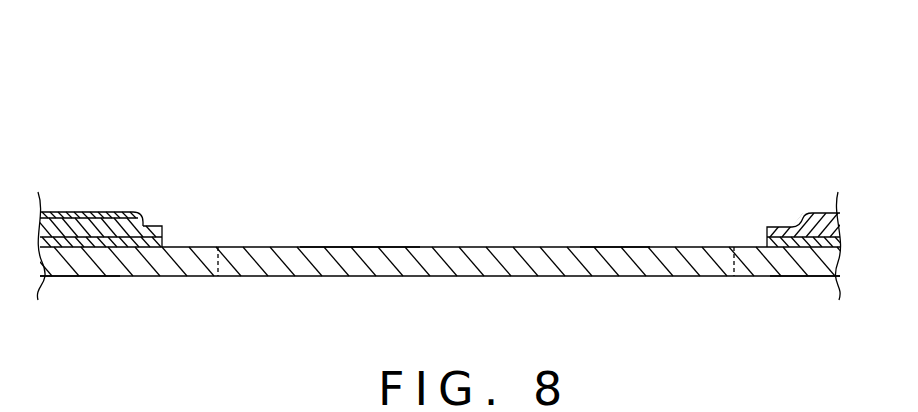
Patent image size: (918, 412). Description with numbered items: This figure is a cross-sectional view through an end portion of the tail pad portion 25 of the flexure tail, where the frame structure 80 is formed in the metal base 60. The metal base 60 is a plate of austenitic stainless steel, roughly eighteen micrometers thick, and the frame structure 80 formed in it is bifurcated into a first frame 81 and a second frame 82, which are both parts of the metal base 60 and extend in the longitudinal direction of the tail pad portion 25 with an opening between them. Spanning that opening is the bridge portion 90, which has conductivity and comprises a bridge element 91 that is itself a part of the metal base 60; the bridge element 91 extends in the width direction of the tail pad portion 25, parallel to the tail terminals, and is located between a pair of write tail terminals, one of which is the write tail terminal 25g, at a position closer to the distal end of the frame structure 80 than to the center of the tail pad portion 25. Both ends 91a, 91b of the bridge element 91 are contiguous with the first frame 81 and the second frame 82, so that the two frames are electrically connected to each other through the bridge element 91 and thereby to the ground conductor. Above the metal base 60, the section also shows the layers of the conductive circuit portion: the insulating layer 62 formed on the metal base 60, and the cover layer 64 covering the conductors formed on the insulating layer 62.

The tail pad portion 25 is at (456, 173).
The write tail terminal 25g is at (612, 247).
The bridge portion 90 is at (359, 245).
The bridge element 91 is at (455, 277).
The end of bridge element 91a is at (728, 263).
The end of bridge element 91b is at (232, 250).
The frame structure 80 is at (757, 284).
The first frame 81 is at (805, 278).
The second frame 82 is at (77, 276).
The metal base 60 is at (130, 276).
The insulating layer 62 is at (150, 247).
The cover layer 64 is at (122, 212).